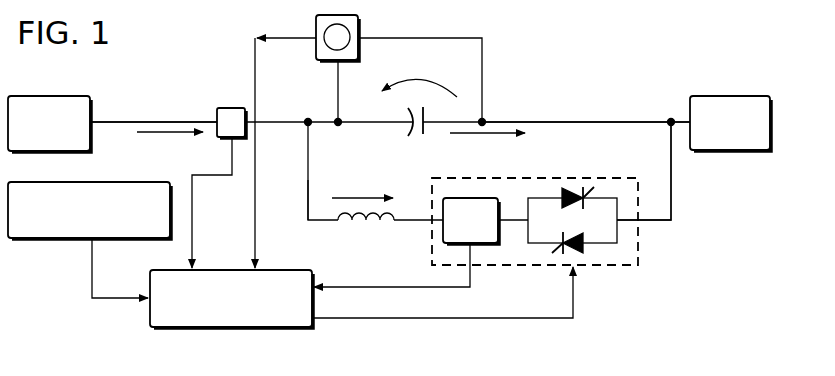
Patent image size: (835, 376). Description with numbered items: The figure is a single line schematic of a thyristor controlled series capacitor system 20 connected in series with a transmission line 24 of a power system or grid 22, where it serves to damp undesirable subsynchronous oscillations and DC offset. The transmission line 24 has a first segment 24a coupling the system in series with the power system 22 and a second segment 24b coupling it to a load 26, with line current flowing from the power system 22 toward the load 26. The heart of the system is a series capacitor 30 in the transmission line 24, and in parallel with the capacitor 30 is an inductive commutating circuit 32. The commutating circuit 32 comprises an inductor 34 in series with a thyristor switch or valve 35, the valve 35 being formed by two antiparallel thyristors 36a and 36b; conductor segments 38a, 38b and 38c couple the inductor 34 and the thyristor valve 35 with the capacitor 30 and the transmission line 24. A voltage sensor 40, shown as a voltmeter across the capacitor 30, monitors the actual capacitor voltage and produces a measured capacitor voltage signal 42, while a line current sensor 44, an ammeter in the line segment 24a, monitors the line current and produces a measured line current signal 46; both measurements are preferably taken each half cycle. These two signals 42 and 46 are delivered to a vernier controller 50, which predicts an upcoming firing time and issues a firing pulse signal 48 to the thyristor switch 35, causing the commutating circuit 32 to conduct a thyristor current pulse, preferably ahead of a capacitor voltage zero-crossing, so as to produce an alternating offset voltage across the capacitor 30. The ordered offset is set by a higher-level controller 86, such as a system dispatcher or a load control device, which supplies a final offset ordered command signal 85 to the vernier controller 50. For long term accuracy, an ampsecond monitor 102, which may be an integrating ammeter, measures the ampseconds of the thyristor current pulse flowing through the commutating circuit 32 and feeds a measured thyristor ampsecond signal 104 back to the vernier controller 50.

The thyristor controlled series capacitor (TCSC) system 20 is at (84, 339).
The power system 22 is at (82, 100).
The transmission line 24 is at (175, 92).
The transmission line segment 24a is at (200, 120).
The transmission line segment 24b is at (672, 118).
The load 26 is at (717, 97).
The capacitor 30 is at (412, 123).
The inductive commutating circuit 32 is at (297, 218).
The inductor 34 is at (342, 223).
The thyristor switch or valve 35 is at (645, 246).
The thyristor 36a is at (569, 199).
The thyristor 36b is at (583, 243).
The conductor segment 38a is at (308, 152).
The conductor segment 38b is at (408, 218).
The conductor segment 38c is at (672, 173).
The voltage sensor 40 is at (317, 55).
The measured capacitor voltage signal 42 is at (253, 55).
The line current sensor 44 is at (235, 107).
The measured line current signal 46 is at (212, 175).
The firing pulse signal 48 is at (490, 320).
The vernier controller 50 is at (157, 319).
The final offset ordered (VFOO) command signal 85 is at (103, 300).
The higher-level controller 86 is at (155, 186).
The thyristor ampsecond (ASP) monitor 102 is at (478, 205).
The measured thyristor ampsecond (ASPM) signal 104 is at (445, 288).